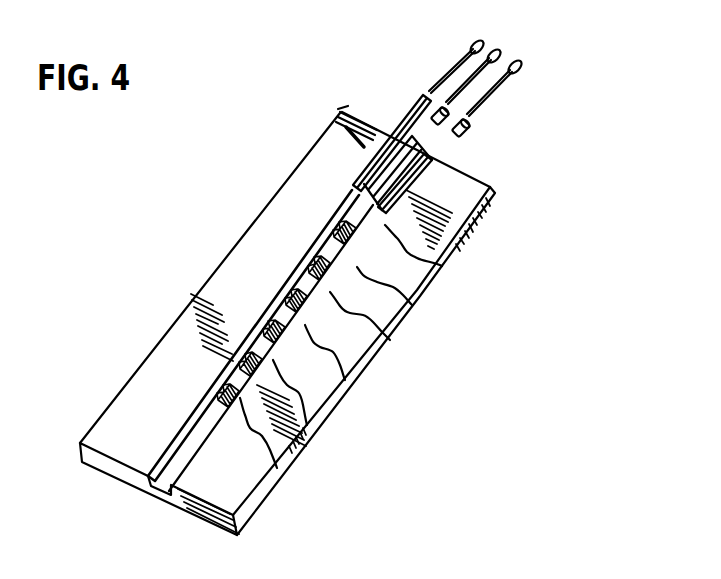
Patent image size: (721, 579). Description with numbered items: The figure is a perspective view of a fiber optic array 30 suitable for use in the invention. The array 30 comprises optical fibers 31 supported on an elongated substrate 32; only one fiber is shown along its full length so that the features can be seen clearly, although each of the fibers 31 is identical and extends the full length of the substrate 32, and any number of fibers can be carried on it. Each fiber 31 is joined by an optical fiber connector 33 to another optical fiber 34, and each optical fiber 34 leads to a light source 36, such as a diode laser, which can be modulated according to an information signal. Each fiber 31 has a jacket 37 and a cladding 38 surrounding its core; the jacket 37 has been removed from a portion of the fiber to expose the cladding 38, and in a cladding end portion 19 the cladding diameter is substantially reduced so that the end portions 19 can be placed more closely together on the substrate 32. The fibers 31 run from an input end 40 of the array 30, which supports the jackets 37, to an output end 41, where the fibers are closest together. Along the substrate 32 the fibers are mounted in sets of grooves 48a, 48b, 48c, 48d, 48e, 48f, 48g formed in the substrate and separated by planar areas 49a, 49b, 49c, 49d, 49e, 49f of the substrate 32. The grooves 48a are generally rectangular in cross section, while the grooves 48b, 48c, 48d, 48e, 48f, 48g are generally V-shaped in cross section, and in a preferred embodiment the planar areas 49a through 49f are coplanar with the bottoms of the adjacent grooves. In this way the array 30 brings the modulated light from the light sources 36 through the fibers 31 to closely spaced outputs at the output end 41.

The cladding end portion 19 is at (147, 495).
The fiber optic array 30 is at (576, 140).
The optical fibers 31 is at (336, 117).
The substrate 32 is at (492, 211).
The optical fiber connector 33 is at (450, 68).
The optical fiber 34 is at (462, 55).
The light source 36 is at (462, 42).
The jacket 37 is at (410, 111).
The cladding 38 is at (345, 200).
The input end 40 is at (482, 163).
The output end 41 is at (215, 527).
The grooves 48a is at (367, 182).
The grooves 48b is at (334, 216).
The grooves 48c is at (307, 253).
The grooves 48d is at (291, 278).
The grooves 48e is at (267, 310).
The grooves 48f is at (234, 357).
The grooves 48g is at (174, 441).
The planar area 49a is at (438, 258).
The planar area 49b is at (400, 290).
The planar area 49c is at (370, 330).
The planar area 49d is at (338, 378).
The planar area 49e is at (300, 424).
The planar area 49f is at (268, 462).